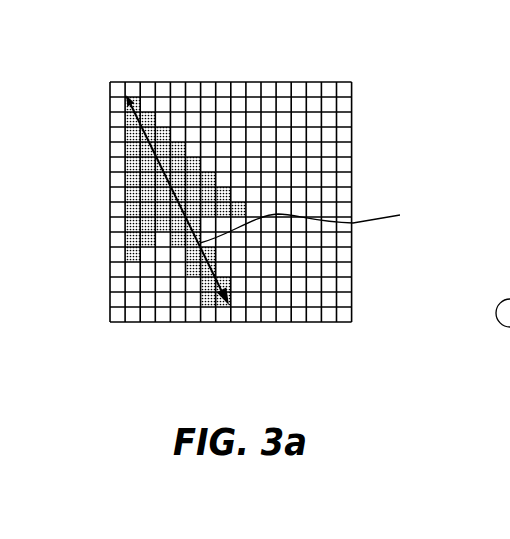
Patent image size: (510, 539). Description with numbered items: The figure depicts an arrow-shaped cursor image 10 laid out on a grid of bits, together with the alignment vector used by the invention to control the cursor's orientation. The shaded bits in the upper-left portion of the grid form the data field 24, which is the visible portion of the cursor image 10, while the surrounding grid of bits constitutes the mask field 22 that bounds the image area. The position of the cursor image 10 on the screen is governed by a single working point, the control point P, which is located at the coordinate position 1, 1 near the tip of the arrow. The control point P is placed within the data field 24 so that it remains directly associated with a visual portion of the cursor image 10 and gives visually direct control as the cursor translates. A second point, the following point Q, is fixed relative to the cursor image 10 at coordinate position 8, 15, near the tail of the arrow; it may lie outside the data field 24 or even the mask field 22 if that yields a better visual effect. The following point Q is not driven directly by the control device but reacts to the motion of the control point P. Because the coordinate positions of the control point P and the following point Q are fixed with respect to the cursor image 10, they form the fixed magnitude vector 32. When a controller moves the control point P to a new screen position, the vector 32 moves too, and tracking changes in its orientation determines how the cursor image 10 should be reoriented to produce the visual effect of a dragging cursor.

The cursor image 10 is at (353, 166).
The fixed magnitude vector 32 is at (311, 224).
The data field 24 is at (127, 222).
The mask field 22 is at (165, 315).
The row coordinate 15 is at (353, 308).
The column coordinate 8 is at (229, 333).
The coordinate origin 1 is at (110, 97).
The control point P is at (127, 97).
The following point Q is at (230, 303).